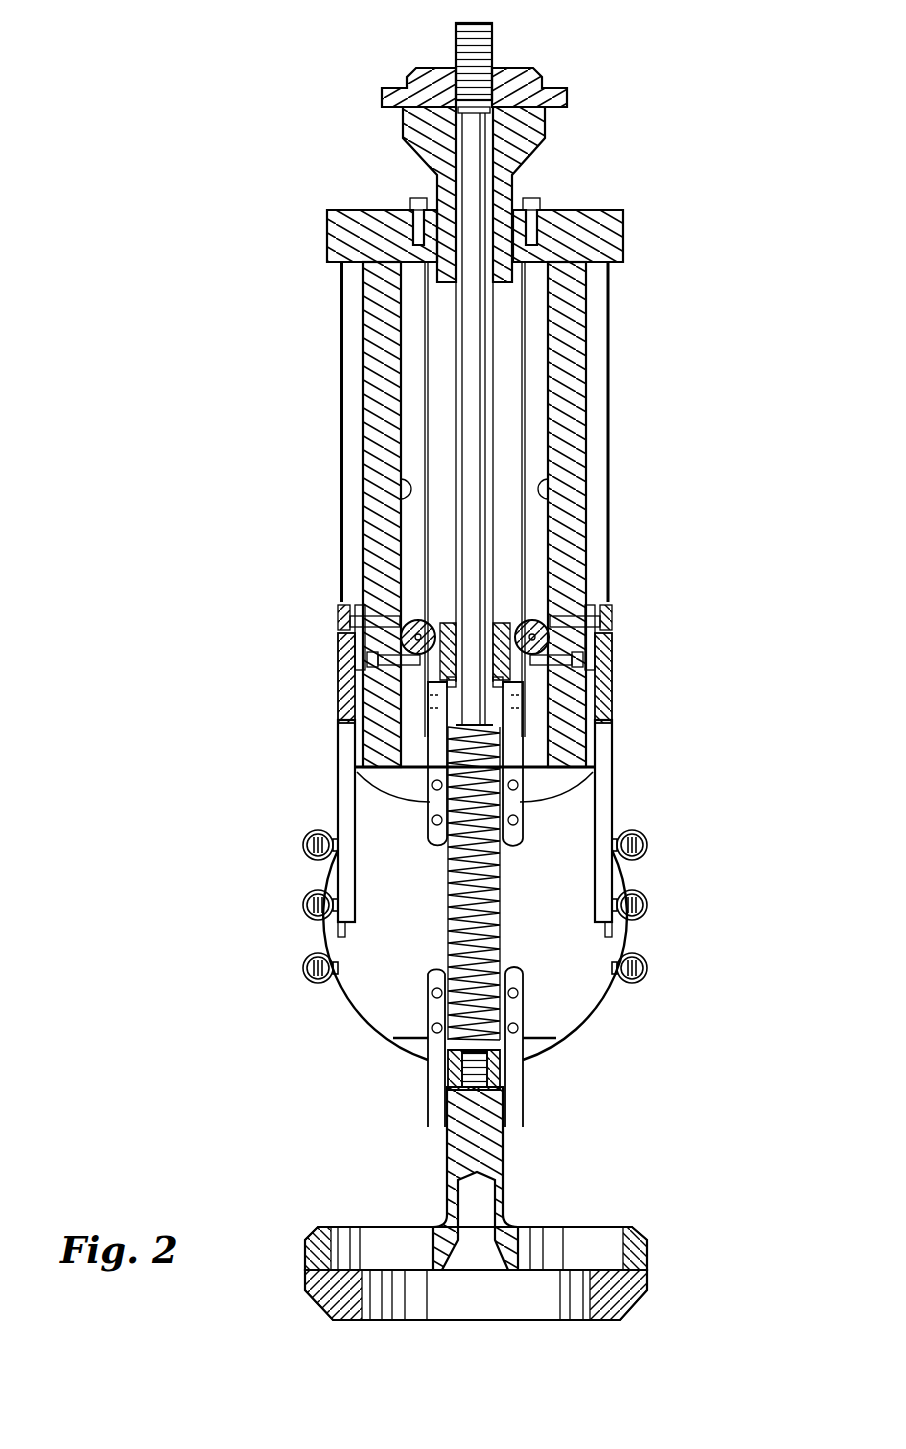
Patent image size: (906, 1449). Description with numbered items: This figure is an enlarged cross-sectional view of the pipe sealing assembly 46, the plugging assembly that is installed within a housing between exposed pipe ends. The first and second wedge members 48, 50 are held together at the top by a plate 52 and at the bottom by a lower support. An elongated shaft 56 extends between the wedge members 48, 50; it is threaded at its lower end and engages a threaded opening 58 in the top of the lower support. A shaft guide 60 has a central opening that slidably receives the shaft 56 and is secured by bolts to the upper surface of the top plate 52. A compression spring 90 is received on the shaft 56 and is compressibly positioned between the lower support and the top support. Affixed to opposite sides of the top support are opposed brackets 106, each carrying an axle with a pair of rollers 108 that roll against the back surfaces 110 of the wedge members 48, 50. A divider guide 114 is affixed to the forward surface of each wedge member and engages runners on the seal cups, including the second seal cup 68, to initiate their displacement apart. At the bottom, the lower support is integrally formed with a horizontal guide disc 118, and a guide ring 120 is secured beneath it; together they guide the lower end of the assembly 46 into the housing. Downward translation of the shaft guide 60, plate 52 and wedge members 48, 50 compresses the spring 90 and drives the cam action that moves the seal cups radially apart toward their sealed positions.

The pipe sealing assembly 46 is at (624, 355).
The first wedge member 48 is at (572, 308).
The second wedge member 50 is at (373, 383).
The plate 52 is at (590, 222).
The elongated shaft 56 is at (483, 45).
The threaded opening 58 is at (465, 1068).
The shaft guide 60 is at (546, 140).
The second seal cup 68 is at (565, 1003).
The compression spring 90 is at (305, 900).
The bracket 106 is at (405, 617).
The rollers 108 is at (352, 648).
The back surface 110 is at (398, 496).
The divider guide 114 is at (345, 788).
The guide disc 118 is at (645, 1233).
The guide ring 120 is at (640, 1300).